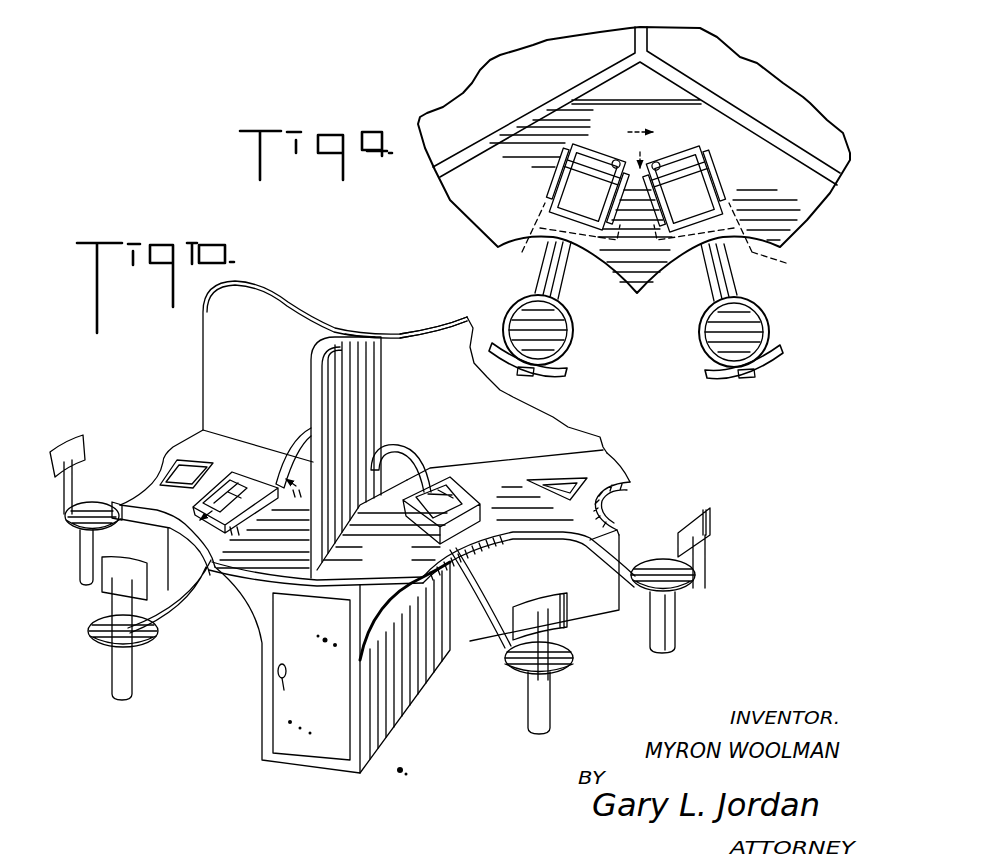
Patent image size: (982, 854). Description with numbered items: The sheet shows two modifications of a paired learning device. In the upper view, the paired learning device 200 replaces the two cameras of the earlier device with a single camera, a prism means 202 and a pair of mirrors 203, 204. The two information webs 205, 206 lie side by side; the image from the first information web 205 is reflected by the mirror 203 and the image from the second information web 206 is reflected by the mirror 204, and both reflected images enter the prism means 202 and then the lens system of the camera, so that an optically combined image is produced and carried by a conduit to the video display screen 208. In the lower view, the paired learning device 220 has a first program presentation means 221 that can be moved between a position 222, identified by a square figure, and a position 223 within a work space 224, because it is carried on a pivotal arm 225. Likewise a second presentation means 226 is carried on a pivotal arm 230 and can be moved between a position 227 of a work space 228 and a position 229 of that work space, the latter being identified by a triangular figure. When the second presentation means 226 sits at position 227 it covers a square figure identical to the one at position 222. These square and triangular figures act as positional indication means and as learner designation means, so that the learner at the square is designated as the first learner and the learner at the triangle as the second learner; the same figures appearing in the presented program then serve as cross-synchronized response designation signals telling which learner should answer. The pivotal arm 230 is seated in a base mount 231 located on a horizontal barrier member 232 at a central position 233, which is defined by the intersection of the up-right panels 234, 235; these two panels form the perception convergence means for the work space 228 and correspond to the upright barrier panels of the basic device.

In FIG. 9, the paired learning device 200 is at (464, 72).
In FIG. 9, the prism means 202 is at (654, 142).
In FIG. 9, the mirror 203 is at (553, 240).
In FIG. 9, the mirror 204 is at (736, 240).
In FIG. 9, the information web 205 is at (578, 182).
In FIG. 9, the information web 206 is at (703, 188).
In FIG. 9, the video display screen 208 is at (651, 82).
In FIG. 10, the paired learning device 220 is at (186, 330).
In FIG. 10, the first program presentation means 221 is at (227, 470).
In FIG. 10, the position 222 is at (140, 472).
In FIG. 10, the position 223 is at (190, 543).
In FIG. 10, the work space 224 is at (223, 376).
In FIG. 10, the pivotal arm 225 is at (297, 431).
In FIG. 10, the second presentation means 226 is at (474, 499).
In FIG. 10, the position 227 is at (505, 549).
In FIG. 10, the work space 228 is at (567, 433).
In FIG. 10, the position 229 is at (623, 498).
In FIG. 10, the pivotal arm 230 is at (402, 452).
In FIG. 10, the base mount 231 is at (370, 478).
In FIG. 10, the horizontal barrier member 232 is at (332, 539).
In FIG. 10, the central position 233 is at (396, 311).
In FIG. 10, the up-right panel 234 is at (353, 352).
In FIG. 10, the up-right panel 235 is at (443, 334).